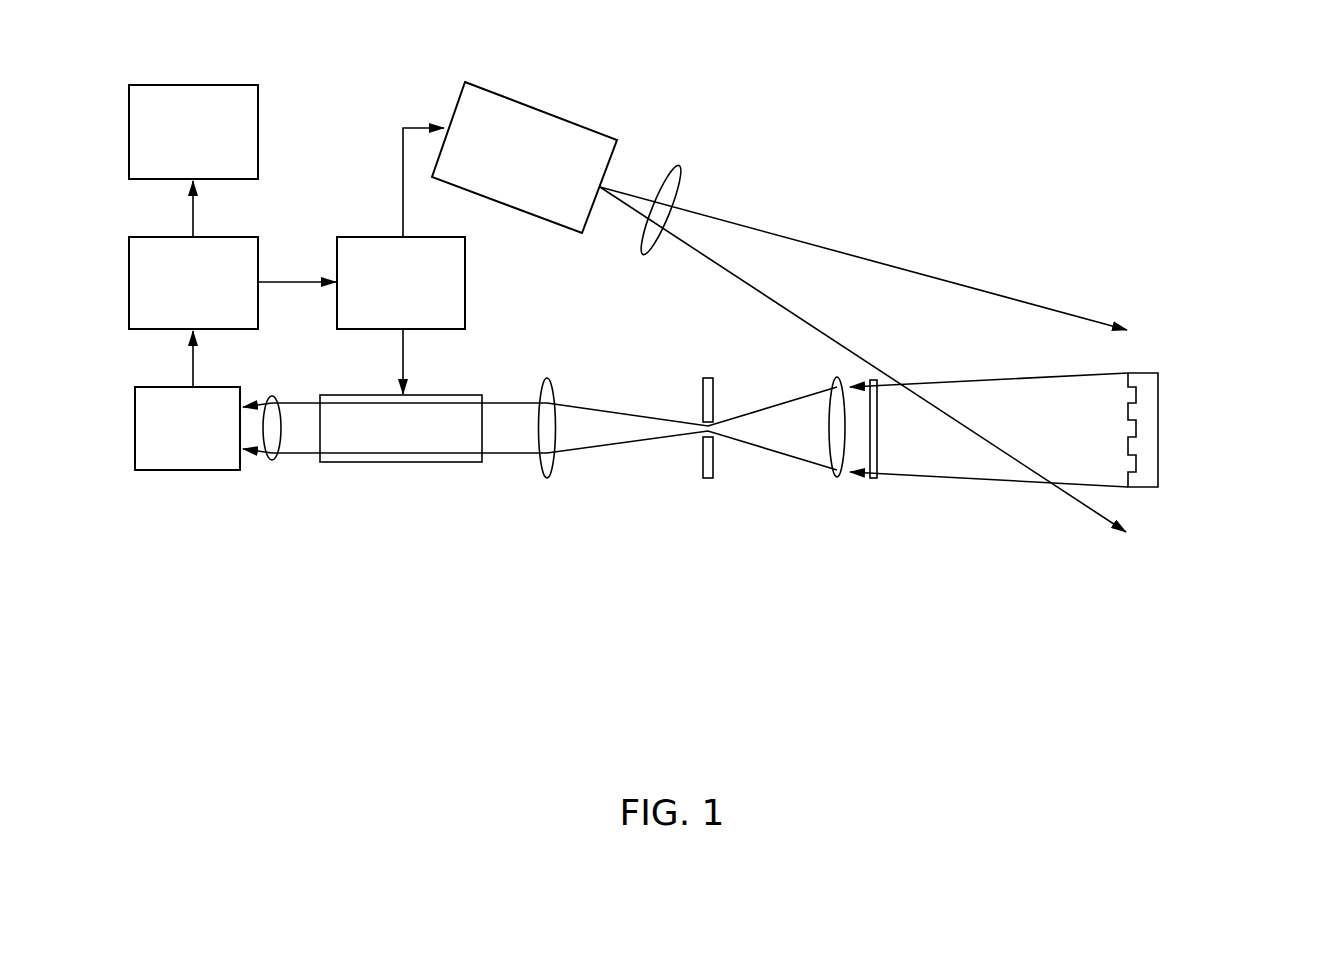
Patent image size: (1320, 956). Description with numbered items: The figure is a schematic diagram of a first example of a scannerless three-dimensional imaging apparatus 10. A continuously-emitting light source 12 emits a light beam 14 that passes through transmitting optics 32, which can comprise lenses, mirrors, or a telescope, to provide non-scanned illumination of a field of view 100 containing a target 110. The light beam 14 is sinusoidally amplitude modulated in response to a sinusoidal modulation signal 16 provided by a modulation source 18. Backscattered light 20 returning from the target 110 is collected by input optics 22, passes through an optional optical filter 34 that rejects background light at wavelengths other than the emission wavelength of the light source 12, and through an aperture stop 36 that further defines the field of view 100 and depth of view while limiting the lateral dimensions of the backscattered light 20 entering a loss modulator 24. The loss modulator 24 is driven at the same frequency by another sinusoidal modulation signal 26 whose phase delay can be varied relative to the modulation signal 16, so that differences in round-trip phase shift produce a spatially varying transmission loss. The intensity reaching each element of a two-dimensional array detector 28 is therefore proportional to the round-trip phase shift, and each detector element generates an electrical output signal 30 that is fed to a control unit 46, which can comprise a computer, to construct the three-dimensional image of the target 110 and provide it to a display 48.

The scannerless 3-D imaging apparatus 10 is at (806, 592).
The light source 12 is at (524, 157).
The light beam 14 is at (830, 250).
The sinusoidal modulation signal 16 is at (400, 183).
The modulation source 18 is at (401, 283).
The backscattered light 20 is at (772, 406).
The input optics 22 is at (828, 443).
The loss modulator 24 is at (413, 463).
The sinusoidal modulation signal 26 is at (398, 357).
The two-dimensional array detector 28 is at (208, 428).
The electrical output signal 30 is at (190, 357).
The transmitting optics 32 is at (678, 160).
The optical filter 34 is at (873, 480).
The aperture stop 36 is at (703, 385).
The control unit 46 is at (232, 255).
The display 48 is at (193, 132).
The field of view 100 is at (1080, 422).
The target 110 is at (1160, 432).